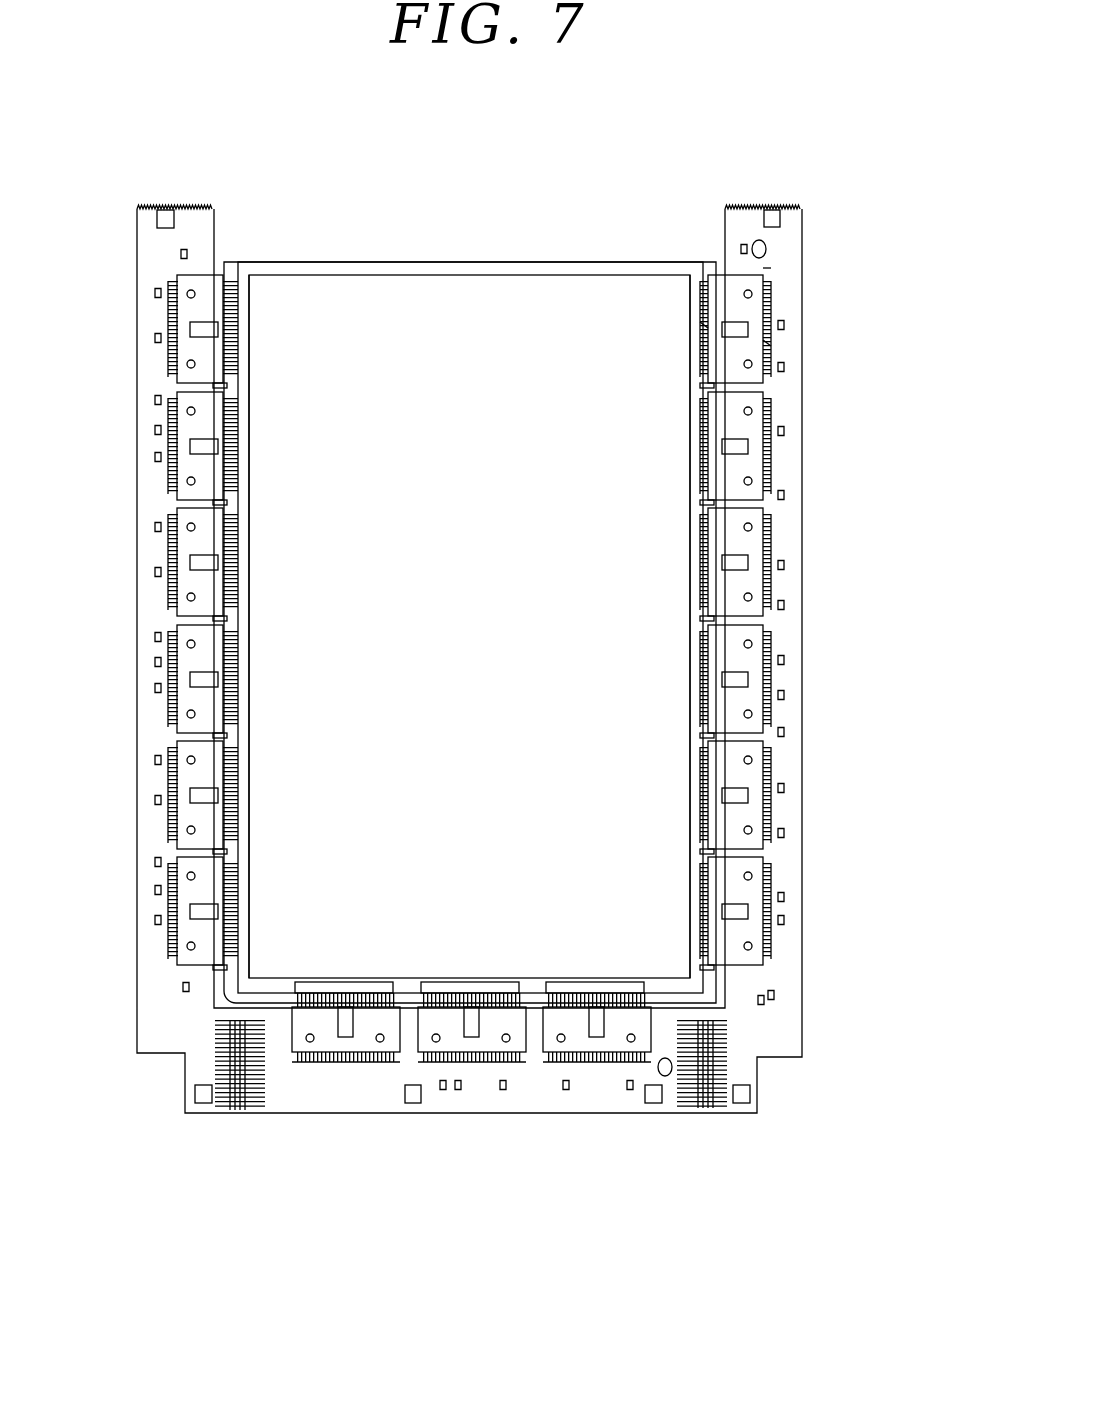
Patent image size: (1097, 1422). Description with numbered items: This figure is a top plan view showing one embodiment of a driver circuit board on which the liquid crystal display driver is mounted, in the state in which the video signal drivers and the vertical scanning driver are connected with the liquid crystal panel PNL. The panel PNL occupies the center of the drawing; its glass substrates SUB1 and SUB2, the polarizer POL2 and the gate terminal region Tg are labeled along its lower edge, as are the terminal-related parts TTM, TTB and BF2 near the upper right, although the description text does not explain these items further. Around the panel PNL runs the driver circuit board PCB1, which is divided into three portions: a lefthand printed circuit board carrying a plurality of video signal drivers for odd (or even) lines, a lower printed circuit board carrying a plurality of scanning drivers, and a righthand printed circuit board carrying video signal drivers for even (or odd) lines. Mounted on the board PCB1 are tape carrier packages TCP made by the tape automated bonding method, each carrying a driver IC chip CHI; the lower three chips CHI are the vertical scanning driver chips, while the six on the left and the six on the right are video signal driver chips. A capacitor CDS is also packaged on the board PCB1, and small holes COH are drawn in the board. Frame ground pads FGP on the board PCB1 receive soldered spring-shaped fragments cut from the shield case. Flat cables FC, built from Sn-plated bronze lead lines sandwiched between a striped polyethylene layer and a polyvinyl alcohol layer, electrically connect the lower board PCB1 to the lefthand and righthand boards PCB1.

The liquid crystal panel PNL is at (470, 585).
The lower transparent glass substrate SUB1 is at (235, 995).
The upper transparent glass substrate SUB2 is at (275, 985).
The upper polarizer POL2 is at (408, 977).
The gate terminals Tg is at (477, 985).
The tape carrier package TCP is at (170, 348).
The driver IC chip CHI is at (190, 682).
The capacitor CDS is at (155, 293).
The driver circuit board PCB1 is at (137, 975).
The frame ground pad FGP is at (165, 222).
The common hole COH is at (767, 249).
The flat cable FC is at (242, 1110).
The bonding pad / bypass film BF2 is at (770, 268).
The terminal TTB is at (768, 343).
The terminal TTM is at (700, 325).